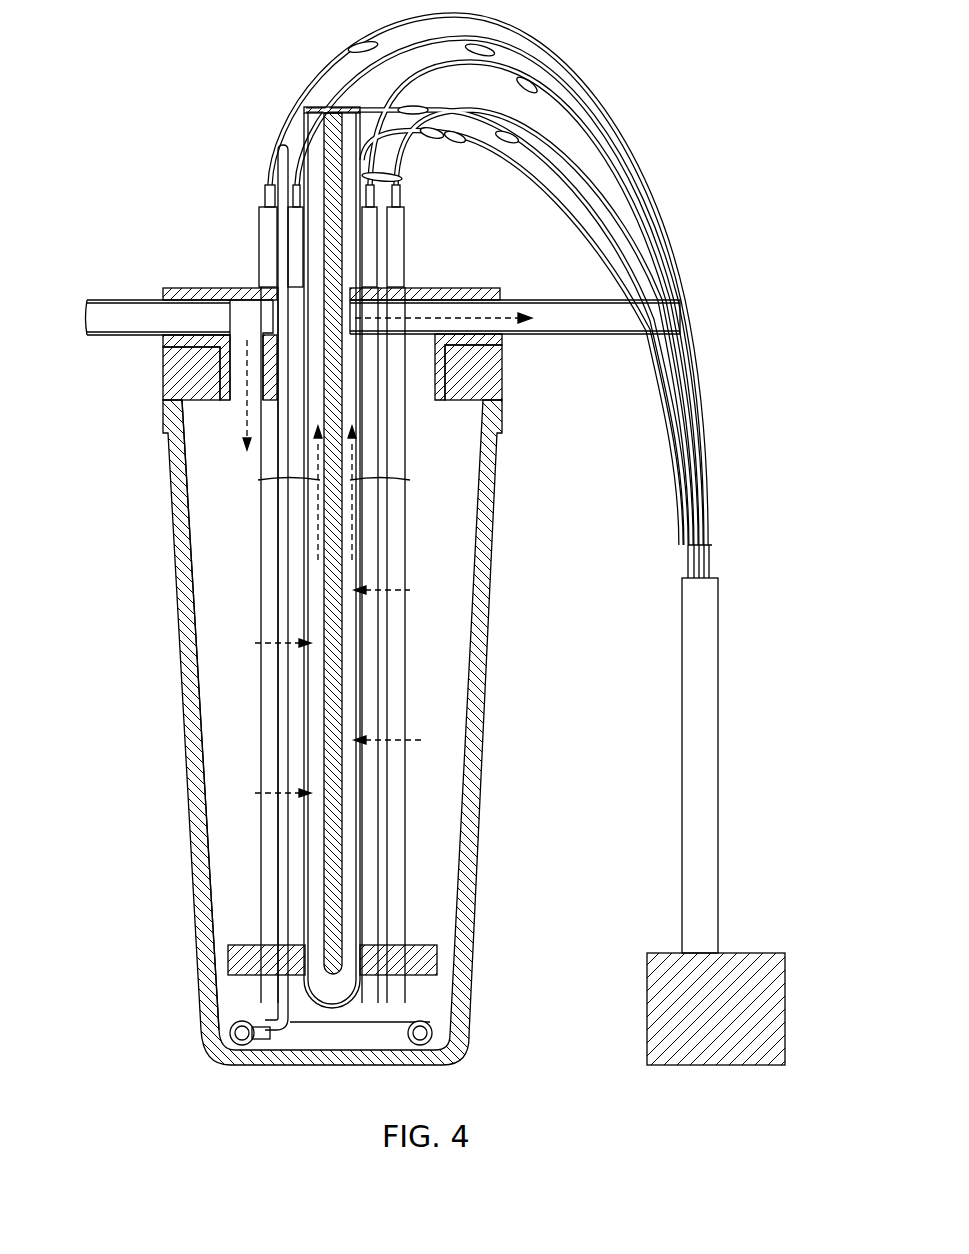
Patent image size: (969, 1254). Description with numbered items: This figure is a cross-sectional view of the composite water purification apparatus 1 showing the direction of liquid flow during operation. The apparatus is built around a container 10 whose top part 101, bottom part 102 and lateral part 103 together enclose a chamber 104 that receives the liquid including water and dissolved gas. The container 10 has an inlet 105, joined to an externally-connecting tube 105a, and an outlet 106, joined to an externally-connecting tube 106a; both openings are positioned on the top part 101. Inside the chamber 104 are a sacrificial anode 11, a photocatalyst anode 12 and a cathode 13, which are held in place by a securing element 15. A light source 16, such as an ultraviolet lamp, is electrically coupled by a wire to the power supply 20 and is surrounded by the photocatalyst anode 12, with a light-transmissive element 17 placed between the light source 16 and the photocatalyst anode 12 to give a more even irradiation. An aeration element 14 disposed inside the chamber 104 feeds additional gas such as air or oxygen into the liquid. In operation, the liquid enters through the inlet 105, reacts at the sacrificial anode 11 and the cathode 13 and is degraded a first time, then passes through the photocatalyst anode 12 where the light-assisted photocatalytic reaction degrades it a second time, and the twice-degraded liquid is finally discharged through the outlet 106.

The composite water purification apparatus 1 is at (697, 140).
The container 10 is at (485, 747).
The sacrificial anode 11 is at (400, 908).
The photocatalyst anode 12 is at (307, 443).
The cathode 13 is at (270, 737).
The aeration element 14 is at (277, 1033).
The securing element 15 is at (238, 955).
The light source 16 is at (333, 555).
The light-transmissive element 17 is at (317, 612).
The power supply 20 is at (647, 985).
The top part 101 is at (450, 290).
The bottom part 102 is at (422, 1060).
The lateral part 103 is at (475, 707).
The chamber 104 is at (445, 795).
The inlet 105 is at (228, 320).
The externally-connecting tube 105a is at (127, 300).
The outlet 106 is at (383, 313).
The externally-connecting tube 106a is at (590, 317).